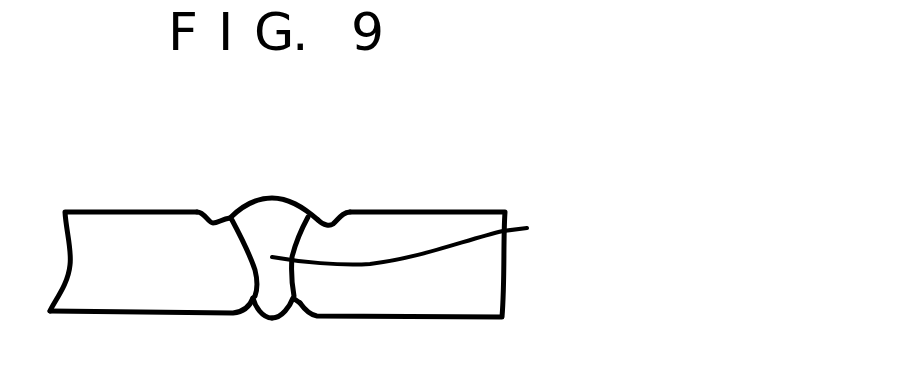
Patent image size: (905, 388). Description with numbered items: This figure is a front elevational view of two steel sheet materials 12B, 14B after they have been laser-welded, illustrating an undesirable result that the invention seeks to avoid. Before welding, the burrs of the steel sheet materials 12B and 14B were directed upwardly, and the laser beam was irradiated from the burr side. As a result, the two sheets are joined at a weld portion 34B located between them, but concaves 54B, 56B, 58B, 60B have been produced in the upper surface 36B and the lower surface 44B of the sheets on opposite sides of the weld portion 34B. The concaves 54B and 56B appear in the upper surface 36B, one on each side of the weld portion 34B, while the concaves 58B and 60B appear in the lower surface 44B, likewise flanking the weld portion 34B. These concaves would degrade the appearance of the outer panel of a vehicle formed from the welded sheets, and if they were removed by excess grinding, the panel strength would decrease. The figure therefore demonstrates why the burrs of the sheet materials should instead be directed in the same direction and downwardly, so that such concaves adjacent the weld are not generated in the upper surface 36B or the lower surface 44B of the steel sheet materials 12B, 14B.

The steel sheet material 12B is at (101, 230).
The steel sheet material 14B is at (455, 222).
The weld portion 34B is at (428, 238).
The upper surface 36B is at (137, 212).
The lower surface 44B is at (123, 315).
The concave 54B is at (215, 216).
The concave 56B is at (335, 222).
The concave 58B is at (247, 306).
The concave 60B is at (297, 305).